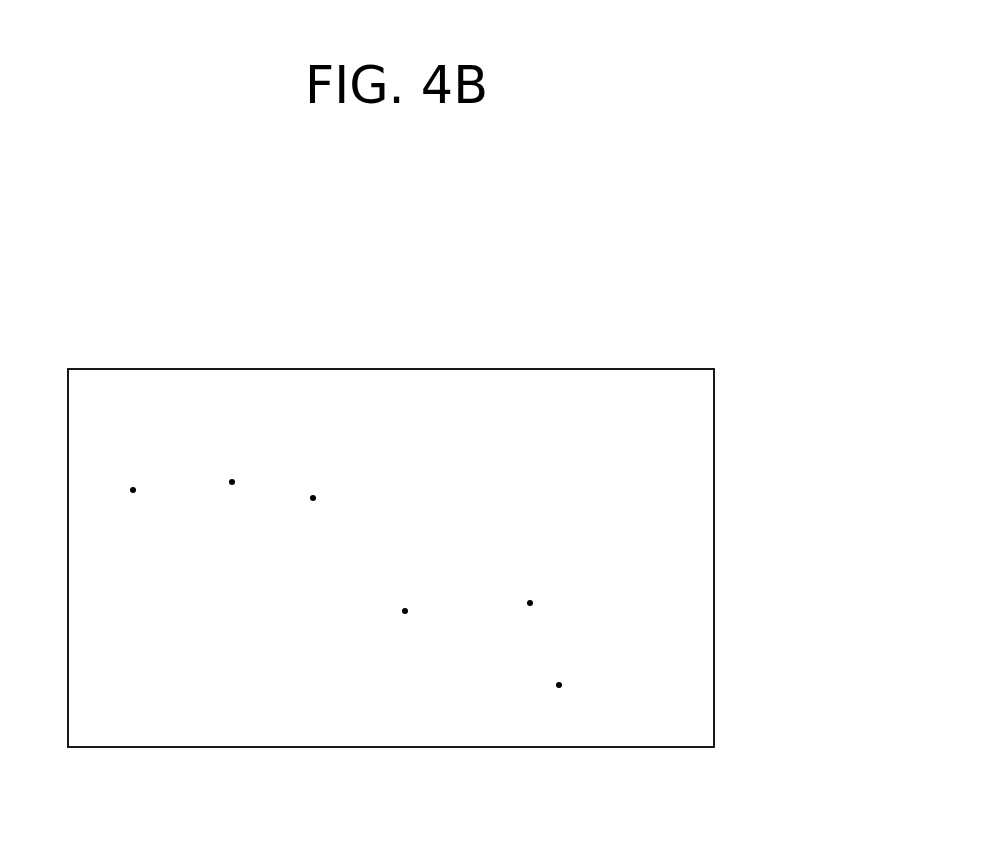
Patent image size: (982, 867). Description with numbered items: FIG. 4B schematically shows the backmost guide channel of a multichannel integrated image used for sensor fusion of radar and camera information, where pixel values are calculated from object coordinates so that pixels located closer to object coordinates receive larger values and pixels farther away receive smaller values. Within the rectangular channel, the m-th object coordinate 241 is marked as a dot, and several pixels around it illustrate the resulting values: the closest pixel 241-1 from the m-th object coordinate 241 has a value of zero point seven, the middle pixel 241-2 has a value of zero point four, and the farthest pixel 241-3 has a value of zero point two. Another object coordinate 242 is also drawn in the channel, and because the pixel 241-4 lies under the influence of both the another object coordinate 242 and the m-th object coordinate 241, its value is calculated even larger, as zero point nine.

The m-th object coordinate 241 is at (405, 611).
The closest pixel 241-1 is at (313, 498).
The middle pixel 241-2 is at (232, 482).
The farthest pixel 241-3 is at (133, 490).
The pixel 241-4 is at (530, 603).
The another object coordinate 242 is at (559, 685).